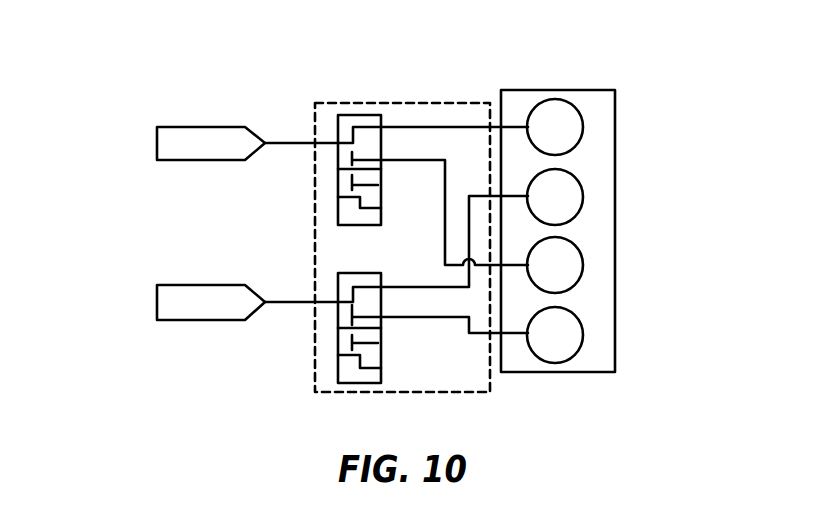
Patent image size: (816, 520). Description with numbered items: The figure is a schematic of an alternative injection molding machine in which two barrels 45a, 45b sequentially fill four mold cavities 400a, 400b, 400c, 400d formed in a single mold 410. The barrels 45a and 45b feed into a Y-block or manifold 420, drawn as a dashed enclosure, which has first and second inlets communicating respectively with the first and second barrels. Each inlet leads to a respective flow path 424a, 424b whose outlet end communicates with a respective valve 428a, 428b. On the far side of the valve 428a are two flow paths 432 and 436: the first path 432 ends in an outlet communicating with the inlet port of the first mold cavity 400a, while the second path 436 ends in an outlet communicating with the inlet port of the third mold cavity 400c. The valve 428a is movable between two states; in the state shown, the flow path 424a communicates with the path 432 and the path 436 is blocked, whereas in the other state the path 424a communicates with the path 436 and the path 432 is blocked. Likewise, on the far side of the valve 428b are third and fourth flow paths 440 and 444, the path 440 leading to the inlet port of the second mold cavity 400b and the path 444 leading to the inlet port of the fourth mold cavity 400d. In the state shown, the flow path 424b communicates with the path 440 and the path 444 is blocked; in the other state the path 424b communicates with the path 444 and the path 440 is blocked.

The Y-block or manifold 420 is at (417, 103).
The mold 410 is at (525, 91).
The first mold cavity 400a is at (567, 128).
The second mold cavity 400b is at (567, 198).
The third mold cavity 400c is at (567, 268).
The fourth mold cavity 400d is at (567, 338).
The first barrel 45a is at (173, 140).
The second barrel 45b is at (175, 299).
The first flow path 424a is at (326, 143).
The second flow path 424b is at (327, 301).
The first valve 428a is at (333, 189).
The second valve 428b is at (333, 349).
The first flow path downstream of valve 428a 432 is at (467, 127).
The second flow path downstream of valve 428a 436 is at (425, 160).
The third flow path 440 is at (413, 286).
The fourth flow path 444 is at (408, 318).